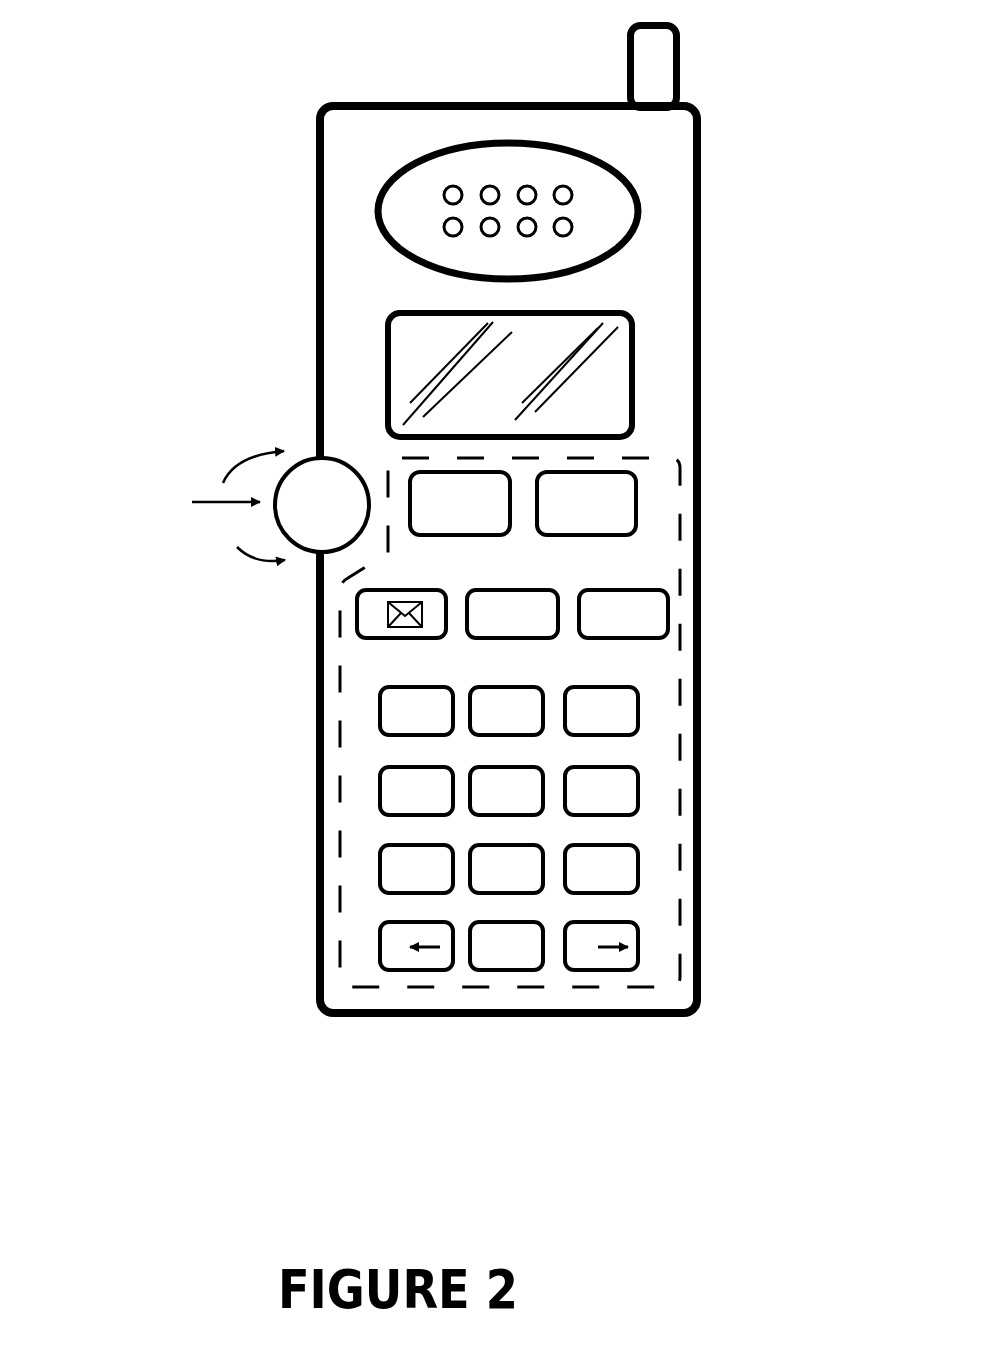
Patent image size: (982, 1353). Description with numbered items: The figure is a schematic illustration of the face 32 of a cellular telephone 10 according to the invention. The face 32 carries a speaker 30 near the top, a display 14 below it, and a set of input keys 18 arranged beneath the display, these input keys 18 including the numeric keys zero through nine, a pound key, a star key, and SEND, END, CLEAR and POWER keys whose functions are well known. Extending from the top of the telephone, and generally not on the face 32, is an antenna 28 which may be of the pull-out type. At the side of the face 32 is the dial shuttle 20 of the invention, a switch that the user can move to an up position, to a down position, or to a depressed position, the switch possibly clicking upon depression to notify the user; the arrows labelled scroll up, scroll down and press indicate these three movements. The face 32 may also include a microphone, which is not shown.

The cellular telephone 10 is at (847, 52).
The antenna 28 is at (630, 37).
The speaker 30 is at (603, 220).
The face 32 is at (358, 230).
The display 14 is at (603, 366).
The input keys 18 is at (650, 537).
The dial shuttle 20 is at (278, 513).